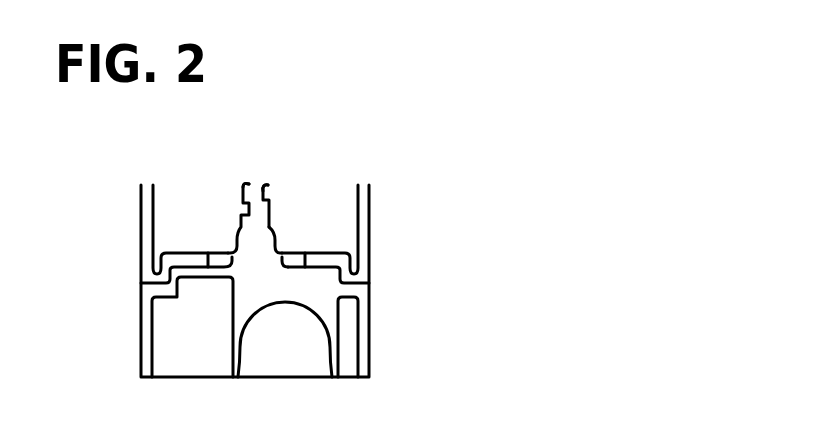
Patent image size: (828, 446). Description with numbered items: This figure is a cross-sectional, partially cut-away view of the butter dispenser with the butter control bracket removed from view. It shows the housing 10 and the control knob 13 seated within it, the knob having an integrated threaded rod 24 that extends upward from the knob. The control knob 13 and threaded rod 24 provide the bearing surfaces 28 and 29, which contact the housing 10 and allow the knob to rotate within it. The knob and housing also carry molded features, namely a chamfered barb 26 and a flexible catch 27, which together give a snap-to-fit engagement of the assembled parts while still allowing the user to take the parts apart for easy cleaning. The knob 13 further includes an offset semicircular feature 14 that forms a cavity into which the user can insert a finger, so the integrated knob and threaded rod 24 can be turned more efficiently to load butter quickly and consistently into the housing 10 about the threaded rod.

The housing 10 is at (150, 247).
The control knob 13 is at (364, 350).
The semicircular feature 14 is at (288, 356).
The threaded rod 24 is at (255, 185).
The chamfered barb 26 is at (274, 234).
The flexible catch 27 is at (290, 247).
The bearing surface 28 is at (236, 238).
The bearing surface 29 is at (337, 263).